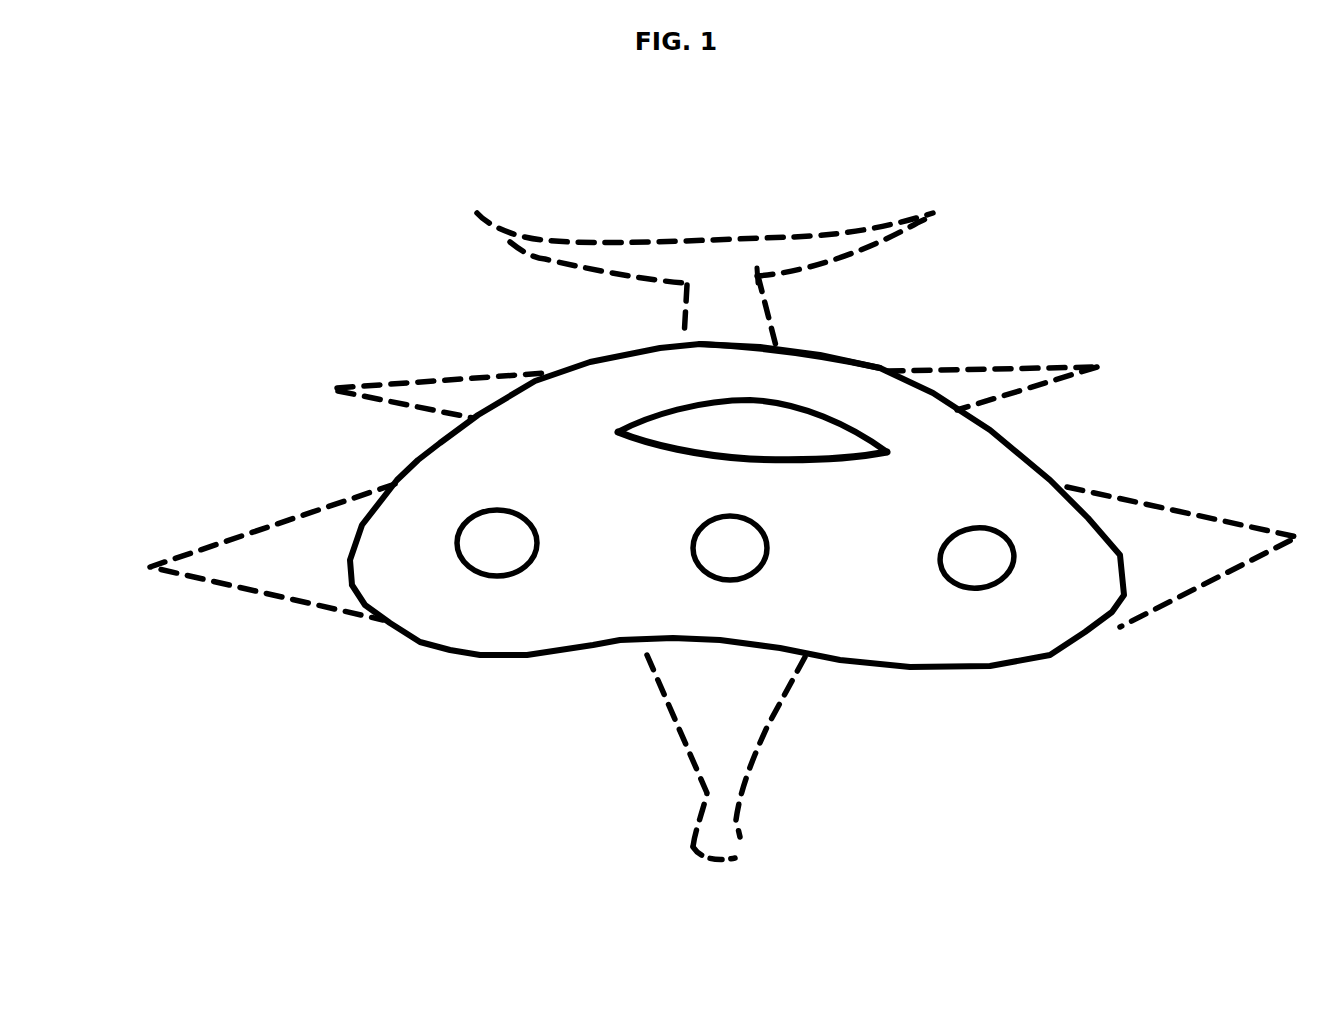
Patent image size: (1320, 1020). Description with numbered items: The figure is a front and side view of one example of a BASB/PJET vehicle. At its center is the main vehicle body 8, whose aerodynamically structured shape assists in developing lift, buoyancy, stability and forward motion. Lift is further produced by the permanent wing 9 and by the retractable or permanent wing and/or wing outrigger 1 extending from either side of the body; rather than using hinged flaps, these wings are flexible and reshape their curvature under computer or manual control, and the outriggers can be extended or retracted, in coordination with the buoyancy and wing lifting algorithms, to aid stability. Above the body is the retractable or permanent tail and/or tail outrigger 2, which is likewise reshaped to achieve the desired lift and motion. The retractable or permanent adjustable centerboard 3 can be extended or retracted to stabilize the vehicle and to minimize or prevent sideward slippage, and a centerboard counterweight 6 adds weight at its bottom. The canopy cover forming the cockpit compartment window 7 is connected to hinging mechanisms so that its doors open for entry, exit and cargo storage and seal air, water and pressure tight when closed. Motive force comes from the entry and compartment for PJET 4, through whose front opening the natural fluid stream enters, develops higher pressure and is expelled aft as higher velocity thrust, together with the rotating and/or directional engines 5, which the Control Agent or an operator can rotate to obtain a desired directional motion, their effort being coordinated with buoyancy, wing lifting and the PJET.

The retractable or permanent wing and/or wing outrigger 1 is at (300, 573).
The retractable or permanent tail and/or tail outrigger 2 is at (723, 298).
The retractable or permanent adjustable centerboard 3 is at (427, 393).
The entry and compartment for PJET 4 is at (510, 545).
The rotating and/or directional engines 5 is at (715, 548).
The centerboard counterweight 6 is at (725, 705).
The cockpit compartment window 7 is at (718, 840).
The main vehicle body 8 is at (741, 437).
The permanent wing 9 is at (847, 410).